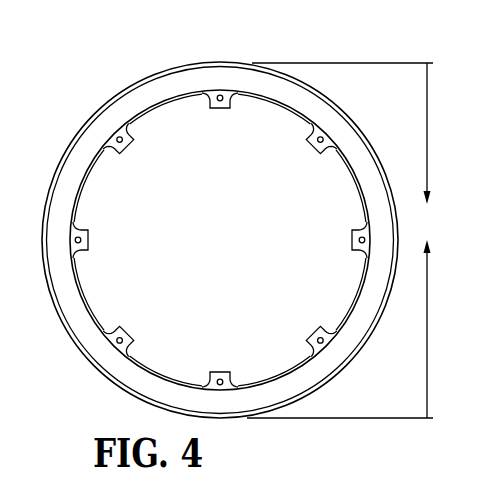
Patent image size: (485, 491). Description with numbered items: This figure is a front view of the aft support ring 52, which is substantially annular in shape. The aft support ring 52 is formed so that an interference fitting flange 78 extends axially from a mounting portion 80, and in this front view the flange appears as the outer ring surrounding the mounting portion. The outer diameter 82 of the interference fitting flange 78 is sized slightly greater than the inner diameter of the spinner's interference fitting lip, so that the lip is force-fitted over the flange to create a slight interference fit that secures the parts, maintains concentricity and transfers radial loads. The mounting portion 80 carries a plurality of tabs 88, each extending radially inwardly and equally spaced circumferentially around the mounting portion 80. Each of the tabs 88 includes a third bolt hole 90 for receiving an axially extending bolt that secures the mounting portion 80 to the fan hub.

The aft support ring 52 is at (103, 61).
The interference fitting flange 78 is at (229, 62).
The mounting portion 80 is at (282, 107).
The outer diameter 82 is at (344, 240).
The tabs 88 is at (127, 145).
The third bolt hole 90 is at (123, 140).